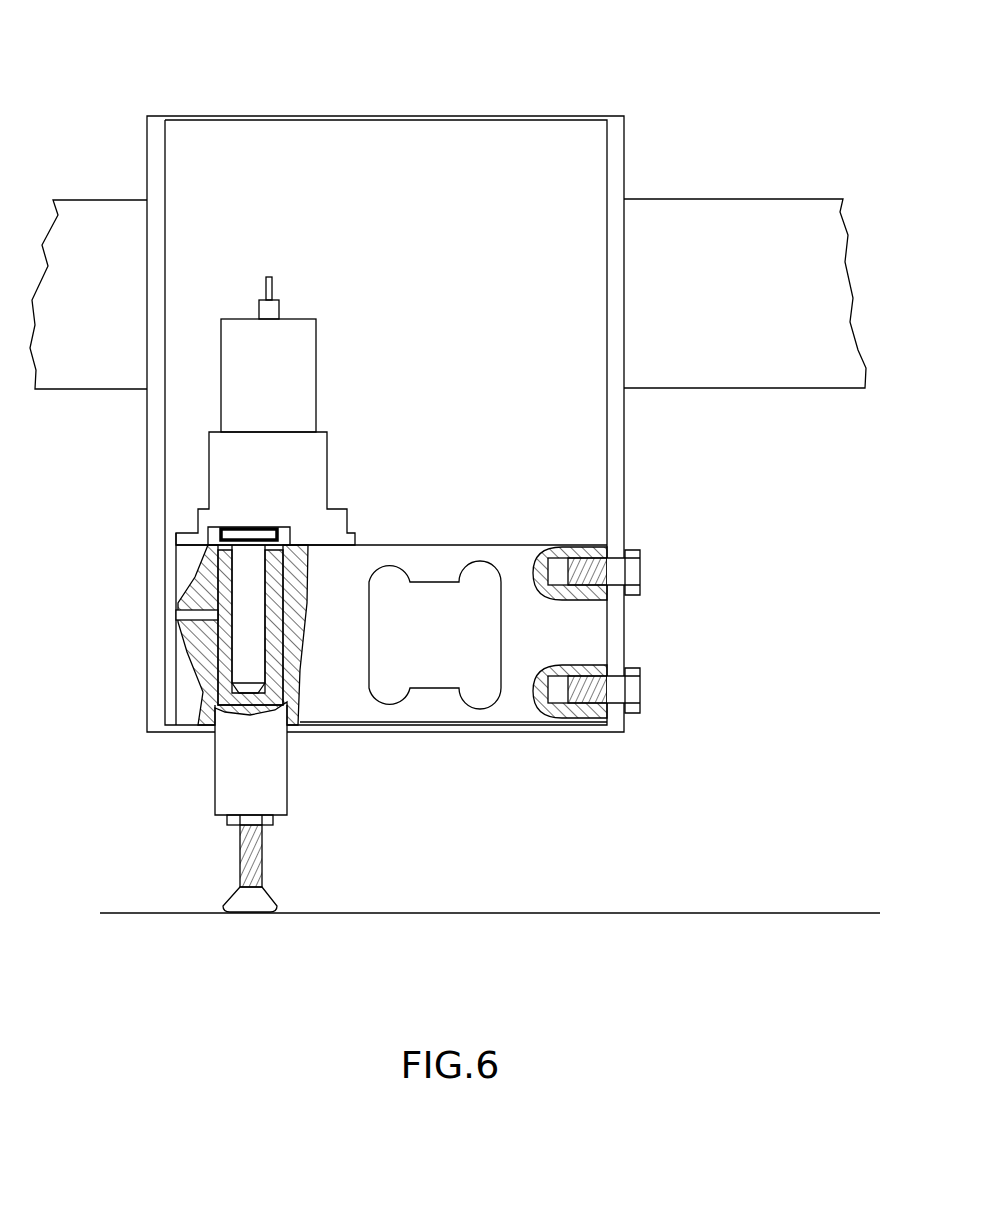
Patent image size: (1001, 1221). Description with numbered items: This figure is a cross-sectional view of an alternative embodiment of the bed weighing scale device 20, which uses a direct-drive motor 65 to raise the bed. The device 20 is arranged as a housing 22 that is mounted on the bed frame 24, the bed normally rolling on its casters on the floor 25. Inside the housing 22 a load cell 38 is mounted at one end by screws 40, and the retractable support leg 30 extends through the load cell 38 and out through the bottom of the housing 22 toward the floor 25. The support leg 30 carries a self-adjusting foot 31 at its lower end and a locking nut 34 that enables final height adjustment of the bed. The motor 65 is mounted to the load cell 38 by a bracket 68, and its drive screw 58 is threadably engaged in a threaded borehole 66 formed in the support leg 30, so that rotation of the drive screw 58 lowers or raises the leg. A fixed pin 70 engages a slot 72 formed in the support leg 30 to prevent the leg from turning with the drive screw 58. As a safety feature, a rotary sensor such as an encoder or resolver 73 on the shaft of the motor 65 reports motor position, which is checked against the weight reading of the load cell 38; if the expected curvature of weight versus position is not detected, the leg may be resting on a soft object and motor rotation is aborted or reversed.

The weighing scale device 20 is at (448, 456).
The housing 22 is at (530, 735).
The bed frame 24 is at (700, 197).
The floor 25 is at (680, 898).
The support leg 30 is at (212, 770).
The self-adjusting feet 31 is at (272, 890).
The locking nut 34 is at (275, 818).
The load cell 38 is at (466, 543).
The screws 40 is at (645, 689).
The drive screw 58 is at (240, 562).
The direct-drive motor 65 is at (299, 316).
The threaded borehole 66 is at (185, 571).
The bracket 68 is at (335, 520).
The fixed pin 70 is at (177, 630).
The slot 72 is at (203, 673).
The encoder or resolver 73 is at (290, 290).